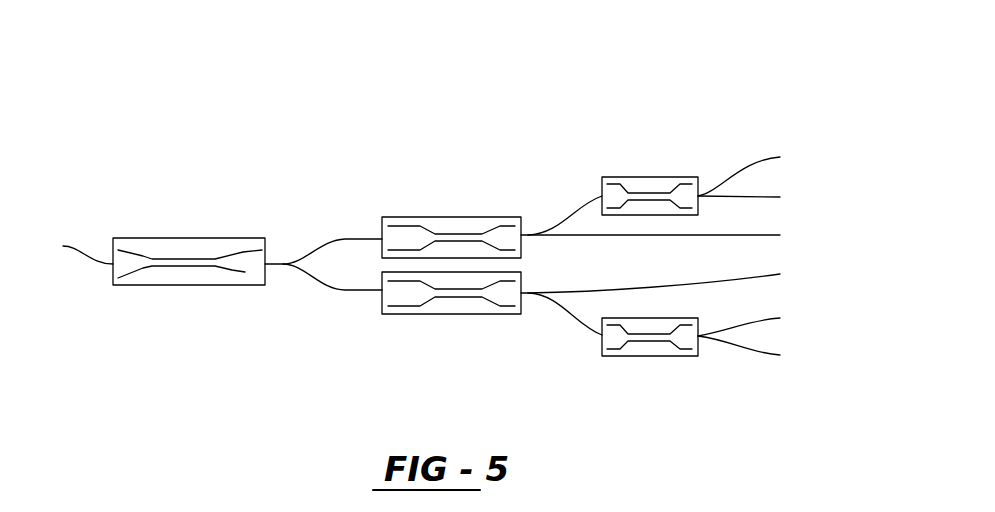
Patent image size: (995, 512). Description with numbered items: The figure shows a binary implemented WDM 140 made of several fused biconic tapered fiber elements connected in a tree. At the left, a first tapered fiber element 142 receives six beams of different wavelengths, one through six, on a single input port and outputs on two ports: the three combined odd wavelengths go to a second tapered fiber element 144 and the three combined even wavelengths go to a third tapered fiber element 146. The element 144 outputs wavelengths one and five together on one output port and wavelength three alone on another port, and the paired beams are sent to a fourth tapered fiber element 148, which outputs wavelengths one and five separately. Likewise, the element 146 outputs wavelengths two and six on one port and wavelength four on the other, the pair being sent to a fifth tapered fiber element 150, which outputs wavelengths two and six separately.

The binary implemented WDM 140 is at (333, 65).
The first tapered fiber element 142 is at (193, 285).
The second tapered fiber element 144 is at (458, 217).
The third tapered fiber element 146 is at (468, 314).
The fourth tapered fiber element 148 is at (647, 177).
The fifth tapered fiber element 150 is at (655, 356).